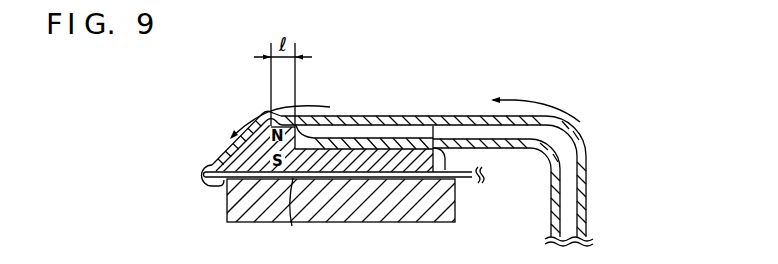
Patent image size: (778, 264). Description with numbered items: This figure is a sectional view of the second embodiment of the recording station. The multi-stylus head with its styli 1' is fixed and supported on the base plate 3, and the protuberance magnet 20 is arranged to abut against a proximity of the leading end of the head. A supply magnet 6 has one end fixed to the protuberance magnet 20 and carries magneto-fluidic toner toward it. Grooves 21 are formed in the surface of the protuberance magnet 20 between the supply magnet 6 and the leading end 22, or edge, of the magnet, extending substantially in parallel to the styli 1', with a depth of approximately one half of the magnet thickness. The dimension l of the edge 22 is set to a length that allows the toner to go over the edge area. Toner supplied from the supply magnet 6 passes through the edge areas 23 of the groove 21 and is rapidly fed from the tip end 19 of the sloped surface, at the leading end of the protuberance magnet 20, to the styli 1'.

The styli 1' is at (295, 214).
The base plate 3 is at (380, 206).
The supply magnet 6 is at (551, 133).
The tip end of the sloped surface 19 is at (230, 156).
The protuberance magnet 20 is at (338, 147).
The grooves 21 is at (381, 130).
The leading end (edge) of the protuberance magnet 22 is at (271, 113).
The edge areas of the groove 23 is at (432, 118).